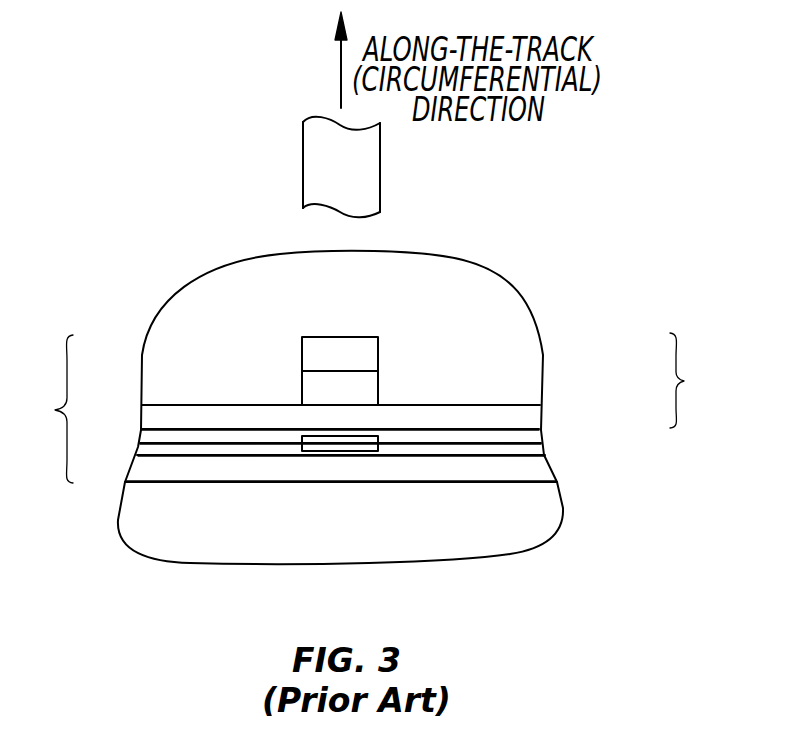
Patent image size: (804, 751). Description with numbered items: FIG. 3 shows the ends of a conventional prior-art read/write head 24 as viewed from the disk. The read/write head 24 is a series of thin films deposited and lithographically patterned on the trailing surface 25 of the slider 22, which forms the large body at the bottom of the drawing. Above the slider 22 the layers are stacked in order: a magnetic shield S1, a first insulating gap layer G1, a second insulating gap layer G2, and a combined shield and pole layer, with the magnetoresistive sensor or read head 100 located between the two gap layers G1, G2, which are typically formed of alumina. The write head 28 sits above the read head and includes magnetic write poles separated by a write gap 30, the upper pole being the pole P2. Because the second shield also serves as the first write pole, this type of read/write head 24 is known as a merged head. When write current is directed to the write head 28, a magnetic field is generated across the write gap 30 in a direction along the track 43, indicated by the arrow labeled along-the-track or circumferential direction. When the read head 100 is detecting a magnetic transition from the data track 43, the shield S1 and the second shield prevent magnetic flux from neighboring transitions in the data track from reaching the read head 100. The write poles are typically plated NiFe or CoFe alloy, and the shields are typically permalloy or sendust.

The data track 43 is at (312, 167).
The slider 22 is at (158, 548).
The read/write head 24 is at (45, 409).
The trailing surface 25 is at (137, 480).
The magnetic shield S1 is at (200, 478).
The insulating gap layer G1 is at (530, 450).
The insulating gap layer G2 is at (525, 434).
The magnetoresistive sensor 100 is at (362, 451).
The write head 28 is at (696, 380).
The write gap 30 is at (374, 386).
The magnetic write pole P2 is at (374, 353).